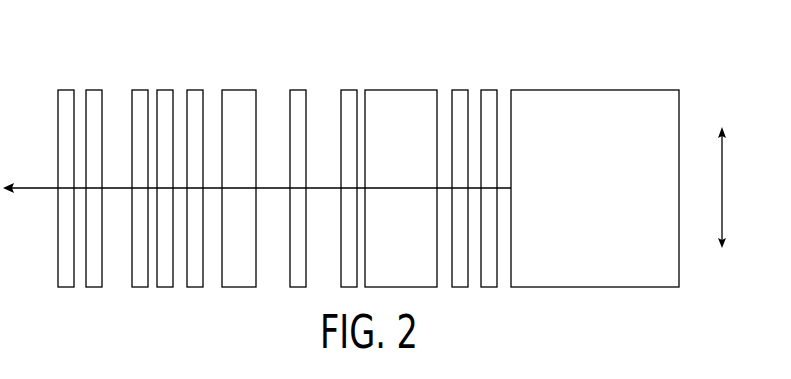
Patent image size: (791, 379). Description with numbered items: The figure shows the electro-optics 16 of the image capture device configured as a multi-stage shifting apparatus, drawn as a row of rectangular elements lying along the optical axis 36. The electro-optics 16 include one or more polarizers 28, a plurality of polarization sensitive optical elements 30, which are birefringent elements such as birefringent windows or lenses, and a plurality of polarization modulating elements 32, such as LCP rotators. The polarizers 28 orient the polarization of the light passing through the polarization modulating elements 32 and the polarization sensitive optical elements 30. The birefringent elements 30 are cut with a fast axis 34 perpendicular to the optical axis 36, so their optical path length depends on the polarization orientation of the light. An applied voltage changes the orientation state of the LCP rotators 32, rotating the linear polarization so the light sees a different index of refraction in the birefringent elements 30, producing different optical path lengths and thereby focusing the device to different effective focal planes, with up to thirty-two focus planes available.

The electro-optics 16 is at (646, 35).
The polarizer 28 is at (66, 89).
The polarization sensitive optical element 30 is at (140, 89).
The polarization modulating element 32 is at (94, 89).
The fast axis 34 is at (723, 188).
The optical axis 36 is at (37, 188).